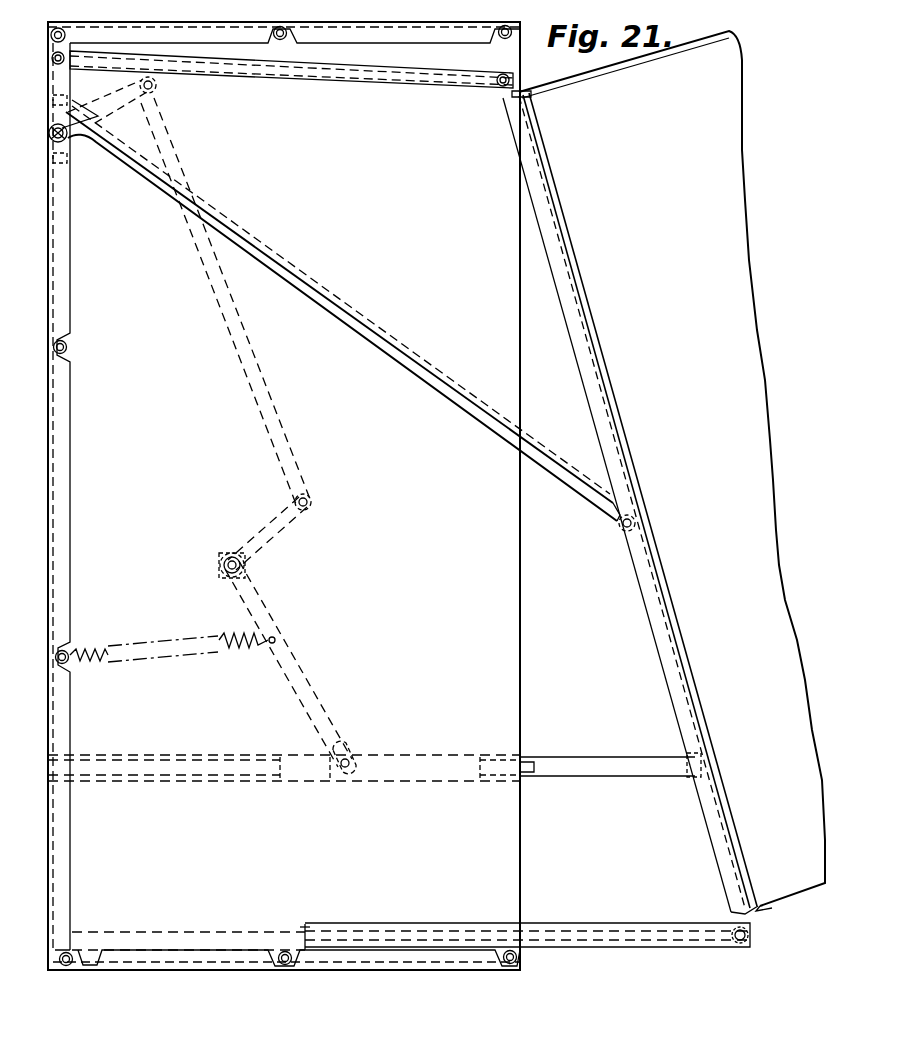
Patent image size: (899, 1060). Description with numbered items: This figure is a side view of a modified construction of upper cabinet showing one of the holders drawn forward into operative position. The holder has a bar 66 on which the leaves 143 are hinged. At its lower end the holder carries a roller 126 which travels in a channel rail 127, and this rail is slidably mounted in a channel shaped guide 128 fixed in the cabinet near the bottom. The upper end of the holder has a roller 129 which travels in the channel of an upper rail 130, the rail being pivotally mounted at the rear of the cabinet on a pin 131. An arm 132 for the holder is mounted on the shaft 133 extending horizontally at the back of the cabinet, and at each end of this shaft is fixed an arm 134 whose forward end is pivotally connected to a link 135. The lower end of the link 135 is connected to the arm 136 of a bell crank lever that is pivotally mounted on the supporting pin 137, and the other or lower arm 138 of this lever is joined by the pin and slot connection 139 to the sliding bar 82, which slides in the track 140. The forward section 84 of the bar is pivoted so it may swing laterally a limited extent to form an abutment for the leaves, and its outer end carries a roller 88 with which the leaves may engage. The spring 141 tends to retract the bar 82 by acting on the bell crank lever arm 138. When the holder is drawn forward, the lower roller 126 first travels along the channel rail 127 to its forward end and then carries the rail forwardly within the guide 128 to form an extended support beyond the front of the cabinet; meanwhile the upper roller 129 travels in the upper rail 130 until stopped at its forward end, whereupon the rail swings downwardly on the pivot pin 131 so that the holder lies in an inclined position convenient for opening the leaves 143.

The bar 66 is at (647, 655).
The sliding bar 82 is at (425, 769).
The forward section of the bar 84 is at (632, 776).
The roller 88 is at (703, 764).
The roller 126 is at (740, 942).
The channel rail 127 is at (635, 948).
The channel shaped guide 128 is at (281, 929).
The roller 129 is at (499, 87).
The upper rail 130 is at (379, 84).
The pin 131 is at (62, 65).
The arm 132 is at (444, 400).
The shaft 133 is at (70, 145).
The arm 134 is at (125, 104).
The link 135 is at (289, 433).
The arm of bell crank lever 136 is at (286, 532).
The supporting pin 137 is at (231, 556).
The lower arm of bell crank lever 138 is at (314, 691).
The pin and slot connection 139 is at (345, 750).
The track 140 is at (253, 784).
The spring 141 is at (239, 668).
The leaves 143 is at (672, 471).